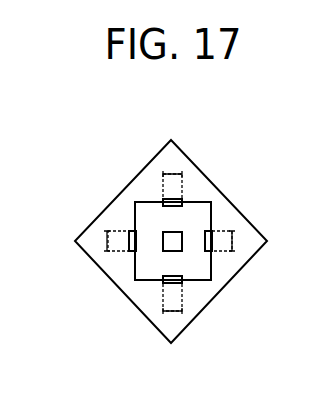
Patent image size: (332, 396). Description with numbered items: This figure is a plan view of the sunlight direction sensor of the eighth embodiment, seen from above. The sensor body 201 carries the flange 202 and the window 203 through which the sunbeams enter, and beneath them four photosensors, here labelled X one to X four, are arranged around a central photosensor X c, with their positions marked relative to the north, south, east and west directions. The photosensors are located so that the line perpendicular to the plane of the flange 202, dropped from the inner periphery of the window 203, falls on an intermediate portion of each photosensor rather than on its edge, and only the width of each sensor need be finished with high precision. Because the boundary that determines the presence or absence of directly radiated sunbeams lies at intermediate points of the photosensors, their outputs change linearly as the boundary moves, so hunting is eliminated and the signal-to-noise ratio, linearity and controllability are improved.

The diamond-shaped sensor substrate 201 is at (214, 188).
The flange 202 is at (227, 199).
The window 203 is at (149, 201).